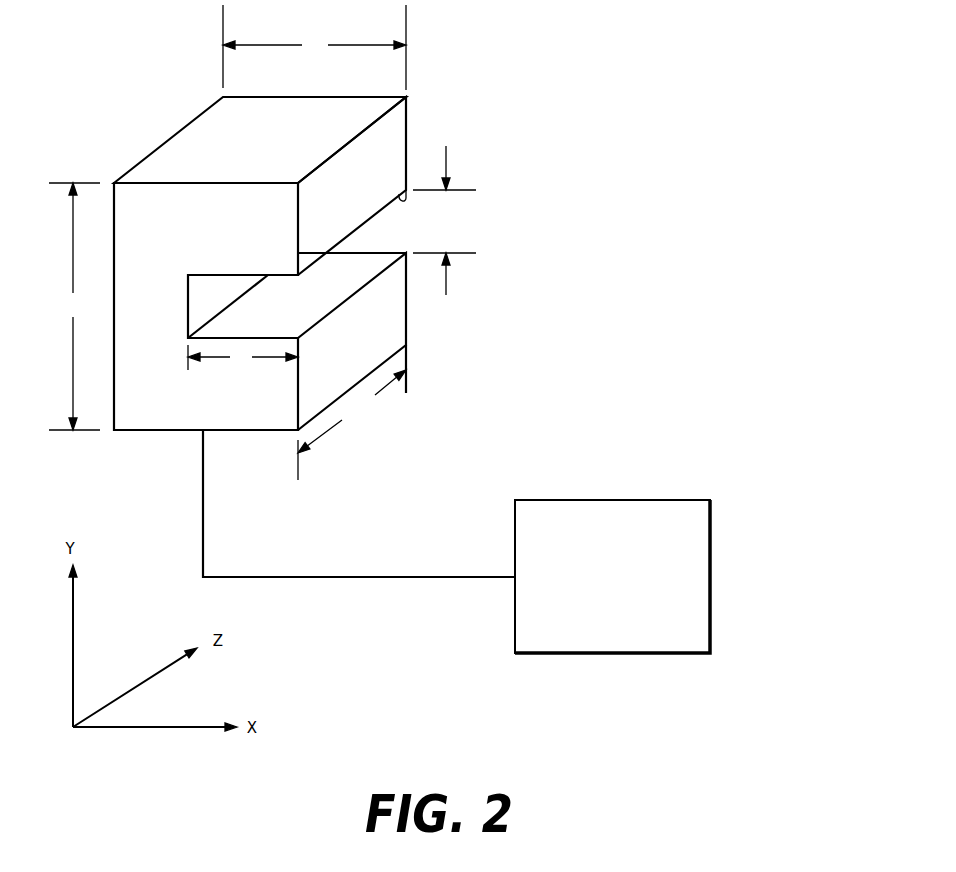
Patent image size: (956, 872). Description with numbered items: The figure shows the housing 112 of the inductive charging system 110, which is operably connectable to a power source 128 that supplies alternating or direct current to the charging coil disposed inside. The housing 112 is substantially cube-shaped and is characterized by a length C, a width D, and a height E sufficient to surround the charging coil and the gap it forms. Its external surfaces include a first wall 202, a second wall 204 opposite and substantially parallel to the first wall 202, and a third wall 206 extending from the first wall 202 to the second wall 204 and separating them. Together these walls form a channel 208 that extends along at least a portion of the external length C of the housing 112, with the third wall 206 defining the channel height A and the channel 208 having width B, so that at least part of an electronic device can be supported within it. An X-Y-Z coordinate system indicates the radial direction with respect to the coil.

The inductive charging system 110 is at (700, 112).
The housing 112 is at (407, 112).
The power source 128 is at (710, 567).
The first wall 202 is at (348, 281).
The second wall 204 is at (413, 188).
The third wall 206 is at (193, 293).
The channel 208 is at (275, 318).